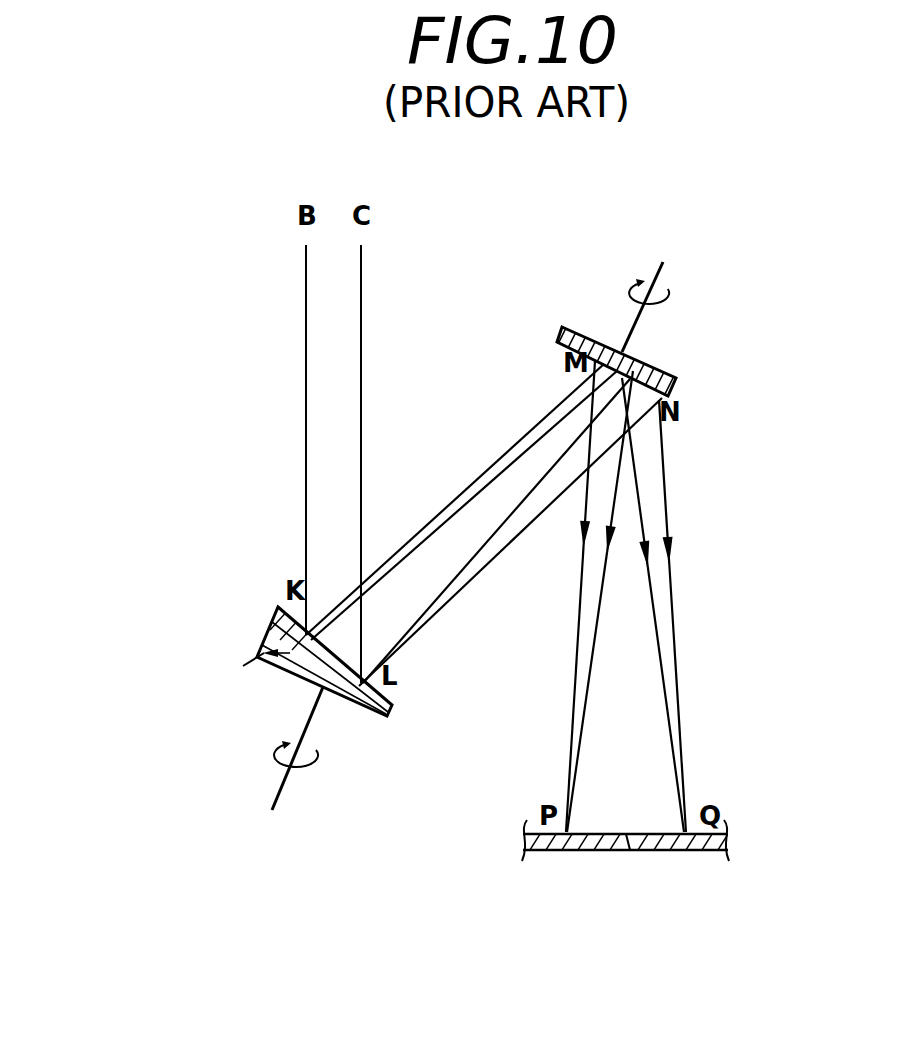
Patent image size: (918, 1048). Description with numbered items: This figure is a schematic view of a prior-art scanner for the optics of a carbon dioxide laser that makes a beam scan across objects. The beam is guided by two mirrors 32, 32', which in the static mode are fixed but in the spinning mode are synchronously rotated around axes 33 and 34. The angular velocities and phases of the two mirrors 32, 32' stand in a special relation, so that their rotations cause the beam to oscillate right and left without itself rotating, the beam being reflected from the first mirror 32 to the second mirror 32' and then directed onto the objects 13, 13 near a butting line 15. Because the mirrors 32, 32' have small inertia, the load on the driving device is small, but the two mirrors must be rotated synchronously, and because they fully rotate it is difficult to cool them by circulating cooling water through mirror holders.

The object 13 is at (553, 852).
The butting line 15 is at (628, 852).
The mirror 32 is at (224, 661).
The mirror 32' is at (633, 365).
The axis 33 is at (187, 768).
The axis 34 is at (667, 298).